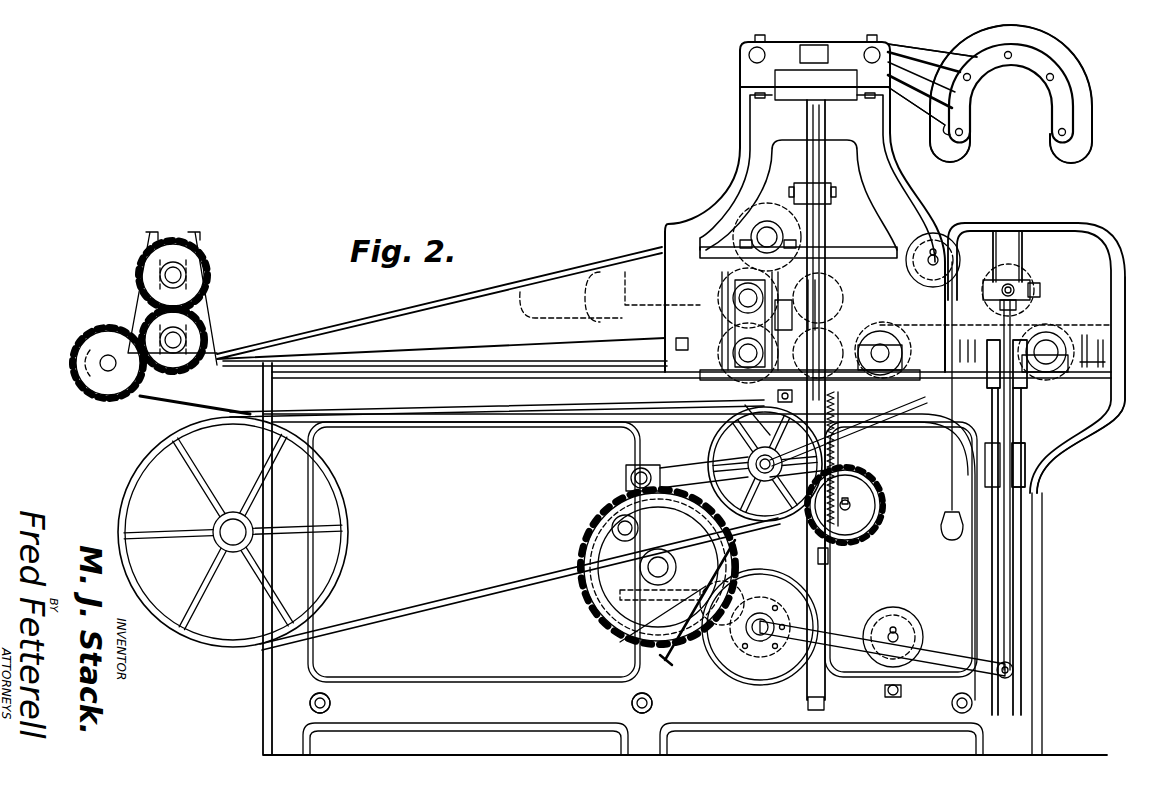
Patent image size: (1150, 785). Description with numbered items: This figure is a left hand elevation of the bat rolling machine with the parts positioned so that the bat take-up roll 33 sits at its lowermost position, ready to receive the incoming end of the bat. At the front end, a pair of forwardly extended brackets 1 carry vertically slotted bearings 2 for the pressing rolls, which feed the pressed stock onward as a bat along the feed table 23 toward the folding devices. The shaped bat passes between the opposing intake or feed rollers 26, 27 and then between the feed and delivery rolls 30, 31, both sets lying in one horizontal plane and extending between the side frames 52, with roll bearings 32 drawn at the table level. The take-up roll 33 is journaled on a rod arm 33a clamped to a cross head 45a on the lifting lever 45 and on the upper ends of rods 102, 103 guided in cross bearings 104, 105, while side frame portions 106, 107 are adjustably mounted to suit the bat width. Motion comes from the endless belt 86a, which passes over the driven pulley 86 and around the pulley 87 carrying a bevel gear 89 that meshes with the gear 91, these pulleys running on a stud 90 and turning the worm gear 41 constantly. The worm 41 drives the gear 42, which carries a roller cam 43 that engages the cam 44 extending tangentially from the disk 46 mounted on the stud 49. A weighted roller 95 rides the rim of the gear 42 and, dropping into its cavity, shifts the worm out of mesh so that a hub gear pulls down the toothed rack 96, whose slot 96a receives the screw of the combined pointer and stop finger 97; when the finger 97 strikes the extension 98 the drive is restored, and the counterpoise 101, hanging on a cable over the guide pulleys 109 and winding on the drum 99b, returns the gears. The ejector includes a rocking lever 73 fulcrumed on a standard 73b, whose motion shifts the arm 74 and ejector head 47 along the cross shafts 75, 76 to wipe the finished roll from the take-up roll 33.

The forwardly extended bracket 1 is at (165, 398).
The vertically slotted bearing 2 is at (150, 296).
The feed trough 23 is at (458, 303).
The intake or feed roller 26 is at (720, 292).
The intake or feed roller 27 is at (712, 330).
The feed and delivery roll 30 is at (838, 296).
The feed and delivery roll 31 is at (866, 345).
The roller 32 is at (888, 323).
The bat take-up roll 33 is at (1015, 262).
The rod arm 33a is at (1020, 288).
The worm gear 41 is at (767, 624).
The gear 42 is at (585, 540).
The roller cam 43 is at (606, 516).
The cam 44 is at (675, 590).
The lifting lever 45 is at (1016, 310).
The cross head 45a is at (1032, 295).
The disk 46 is at (760, 627).
The ejector head 47 is at (1065, 62).
The stud 49 is at (756, 630).
The side frame 52 is at (511, 549).
The rocking lever 73 is at (808, 168).
The standard 73b is at (820, 190).
The ejector arm 74 is at (935, 62).
The cross shaft 75 is at (762, 52).
The cross shaft 76 is at (876, 52).
The driven pulley 86 is at (340, 508).
The endless belt 86a is at (450, 603).
The pulley 87 is at (715, 438).
The bevel gear 89 is at (750, 410).
The stud 90 is at (745, 455).
The gear 91 is at (811, 484).
The roller 95 is at (627, 480).
The toothed rack 96 is at (830, 455).
The vertically elongated slot 96a is at (828, 558).
The combined pointer and stop finger 97 is at (830, 405).
The extension 98 is at (840, 420).
The drum 99b is at (866, 492).
The counterpoise 101 is at (950, 536).
The rod 102 is at (1000, 578).
The rod 103 is at (1022, 600).
The cross bearing 104 is at (1026, 452).
The cross bearing 105 is at (990, 388).
The side frame portion 106 is at (1088, 236).
The side frame portion 107 is at (1021, 222).
The guide pulley 109 is at (938, 234).